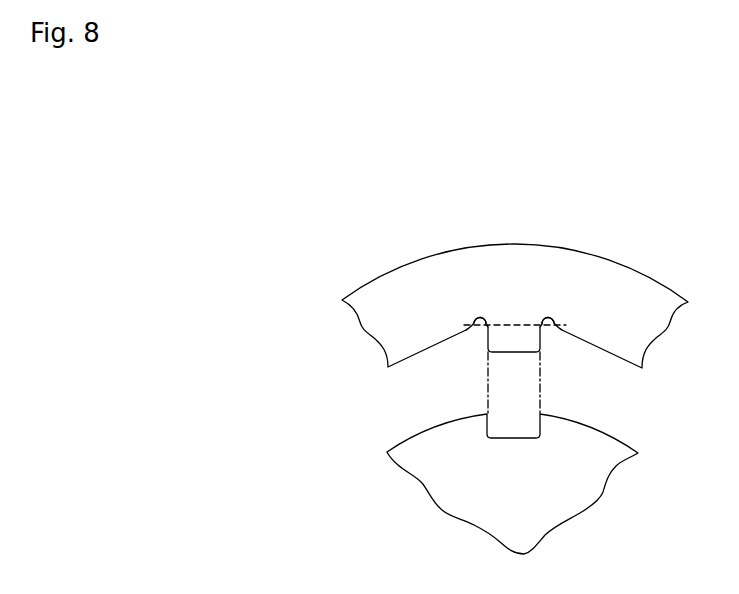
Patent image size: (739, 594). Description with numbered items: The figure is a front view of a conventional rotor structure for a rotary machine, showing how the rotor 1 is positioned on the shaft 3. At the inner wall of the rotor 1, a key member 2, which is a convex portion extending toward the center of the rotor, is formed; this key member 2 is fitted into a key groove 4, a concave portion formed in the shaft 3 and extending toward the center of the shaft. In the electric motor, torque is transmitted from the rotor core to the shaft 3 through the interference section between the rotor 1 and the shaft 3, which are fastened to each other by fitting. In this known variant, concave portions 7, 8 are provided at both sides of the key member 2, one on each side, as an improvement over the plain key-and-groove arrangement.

The rotor 1 is at (640, 273).
The key member 2 is at (510, 333).
The shaft 3 is at (603, 448).
The key groove 4 is at (512, 437).
The concave portion 7 is at (464, 327).
The concave portion 8 is at (557, 330).